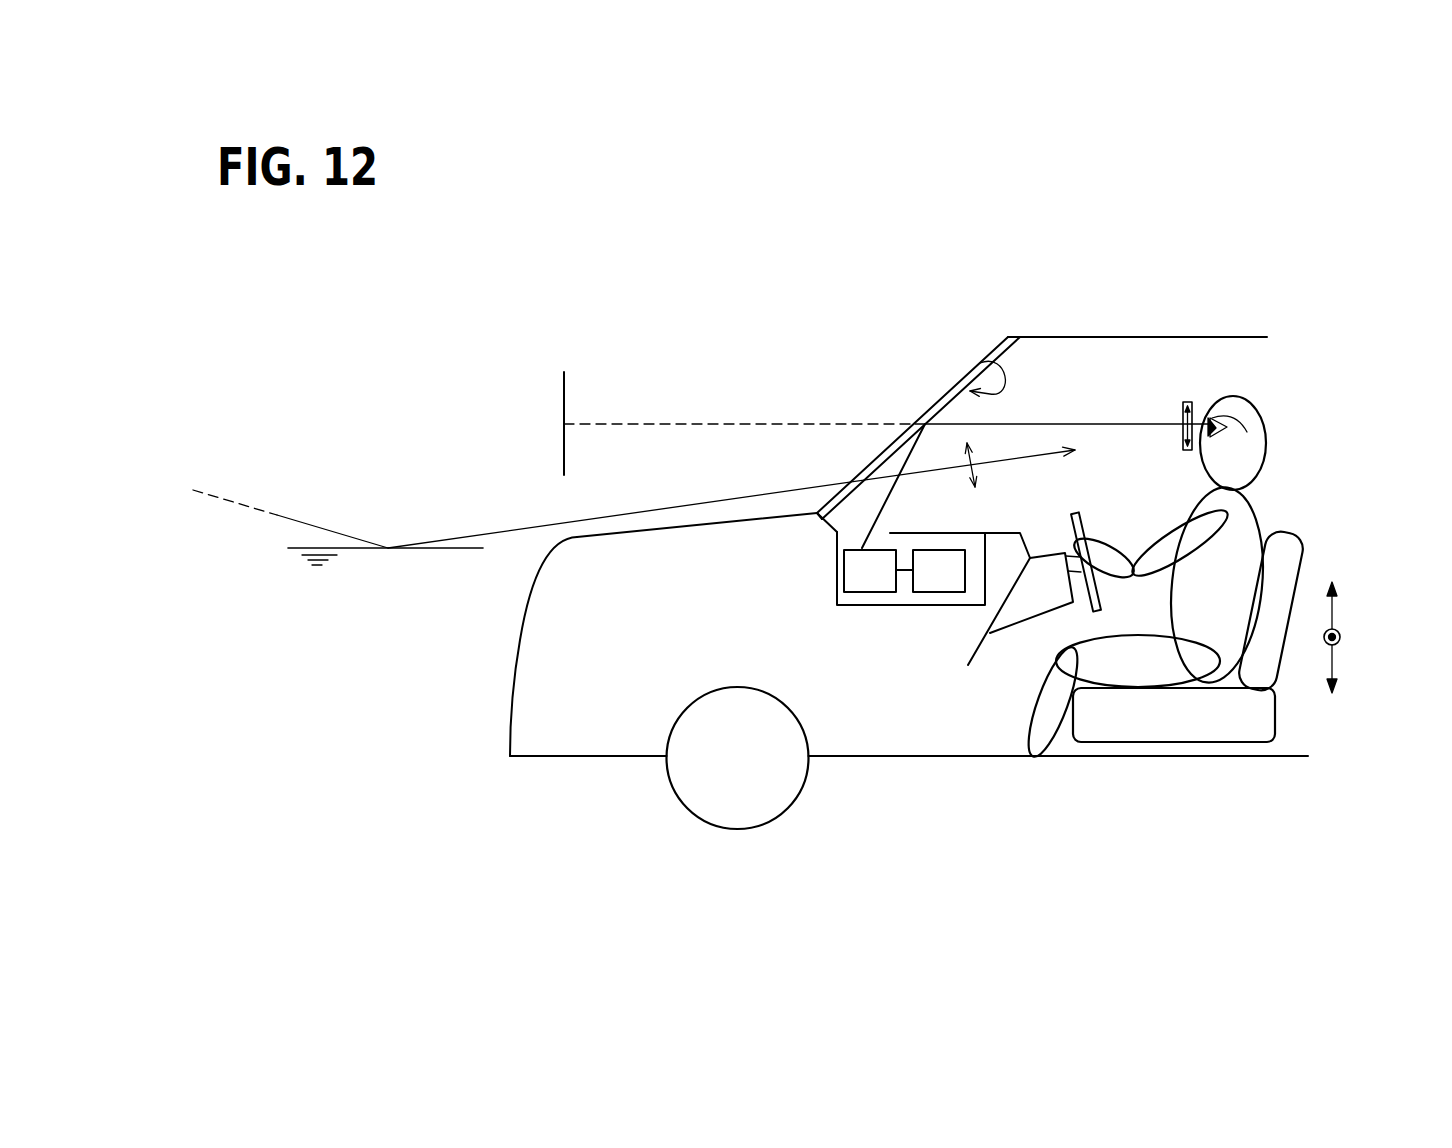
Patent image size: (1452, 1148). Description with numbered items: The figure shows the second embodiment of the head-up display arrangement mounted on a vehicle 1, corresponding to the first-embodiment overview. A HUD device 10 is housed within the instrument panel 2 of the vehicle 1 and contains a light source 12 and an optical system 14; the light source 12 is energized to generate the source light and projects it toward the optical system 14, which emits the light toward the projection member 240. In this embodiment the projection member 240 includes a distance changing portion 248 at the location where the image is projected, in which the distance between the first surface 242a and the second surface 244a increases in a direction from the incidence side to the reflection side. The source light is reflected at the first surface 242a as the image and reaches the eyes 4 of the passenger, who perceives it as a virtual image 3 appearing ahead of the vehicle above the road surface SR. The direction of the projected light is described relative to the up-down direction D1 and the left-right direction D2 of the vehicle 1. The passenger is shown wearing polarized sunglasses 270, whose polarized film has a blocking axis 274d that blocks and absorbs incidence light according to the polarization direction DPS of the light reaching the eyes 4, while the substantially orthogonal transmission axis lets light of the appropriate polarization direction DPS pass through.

The vehicle 1 is at (1251, 337).
The instrument panel 2 is at (1000, 532).
The virtual image 3 is at (566, 376).
The eyes 4 is at (1215, 425).
The HUD device 10 is at (873, 593).
The light source 12 is at (937, 595).
The optical system 14 is at (870, 595).
The projection member 240 is at (918, 394).
The first surface 242a is at (982, 368).
The second surface 244a is at (998, 340).
The distance changing portion 248 is at (915, 417).
The polarized sunglasses 270 is at (1182, 412).
The blocking axis 274d is at (1192, 404).
The polarization direction DPS is at (963, 475).
The road surface SR is at (313, 547).
The up-down direction D1 is at (1335, 603).
The left-right direction D2 is at (1342, 637).